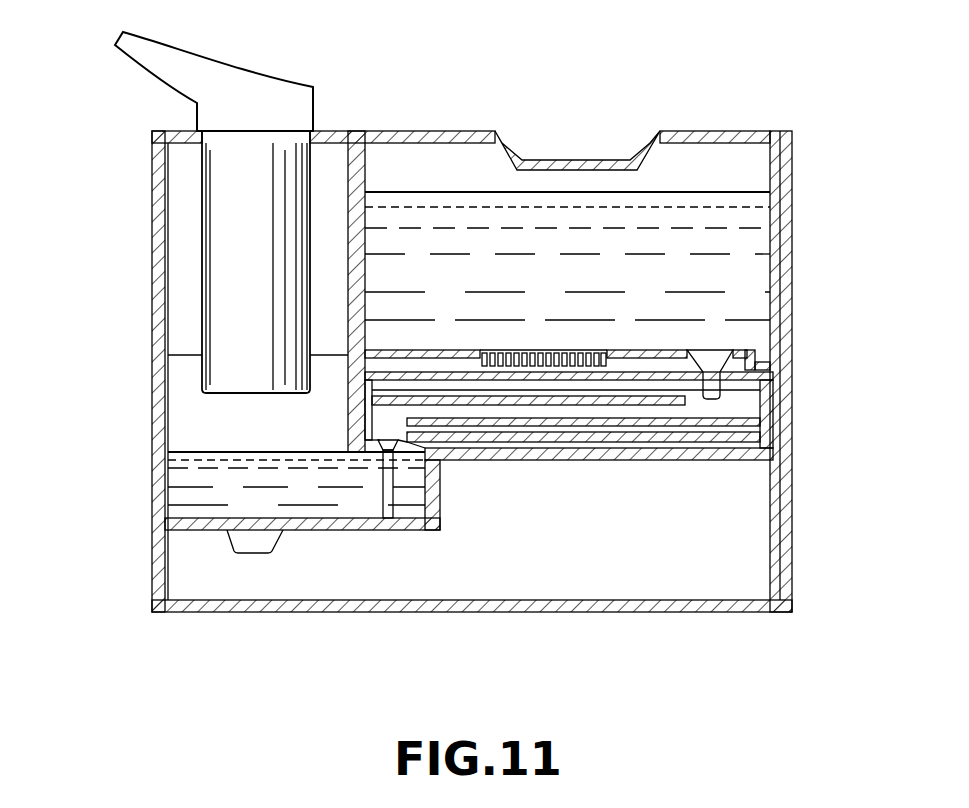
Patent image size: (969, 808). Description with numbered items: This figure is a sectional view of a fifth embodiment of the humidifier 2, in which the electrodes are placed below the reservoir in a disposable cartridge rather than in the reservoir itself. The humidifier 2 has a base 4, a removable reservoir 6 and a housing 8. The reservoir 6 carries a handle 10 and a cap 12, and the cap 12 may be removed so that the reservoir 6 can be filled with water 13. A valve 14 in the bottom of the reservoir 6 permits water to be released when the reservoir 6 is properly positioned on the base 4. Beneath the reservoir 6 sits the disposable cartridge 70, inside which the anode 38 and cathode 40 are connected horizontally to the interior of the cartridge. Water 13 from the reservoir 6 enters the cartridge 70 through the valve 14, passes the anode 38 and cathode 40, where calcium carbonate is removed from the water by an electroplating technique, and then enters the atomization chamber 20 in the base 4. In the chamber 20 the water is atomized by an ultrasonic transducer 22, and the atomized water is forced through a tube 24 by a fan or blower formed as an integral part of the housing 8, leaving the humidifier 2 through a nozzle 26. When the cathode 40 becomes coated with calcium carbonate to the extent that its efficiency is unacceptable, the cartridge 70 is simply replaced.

The humidifier 2 is at (220, 656).
The base 4 is at (385, 573).
The reservoir 6 is at (655, 140).
The housing 8 is at (160, 240).
The handle 10 is at (585, 140).
The cap 12 is at (540, 365).
The water 13 is at (750, 215).
The valve 14 is at (723, 352).
The atomization chamber 20 is at (178, 410).
The ultrasonic transducer 22 is at (232, 545).
The tube 24 is at (200, 195).
The nozzle 26 is at (257, 82).
The anode 38 is at (365, 400).
The cathode 40 is at (612, 425).
The disposable cartridge 70 is at (762, 390).